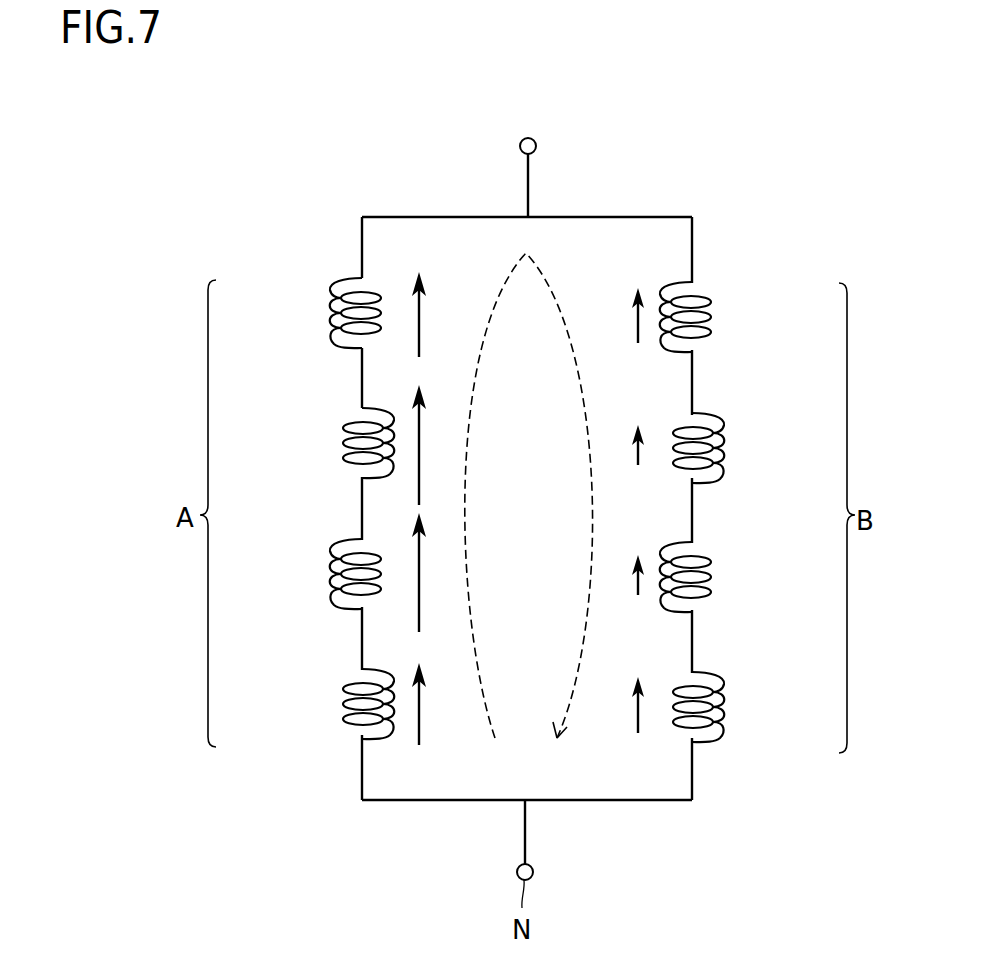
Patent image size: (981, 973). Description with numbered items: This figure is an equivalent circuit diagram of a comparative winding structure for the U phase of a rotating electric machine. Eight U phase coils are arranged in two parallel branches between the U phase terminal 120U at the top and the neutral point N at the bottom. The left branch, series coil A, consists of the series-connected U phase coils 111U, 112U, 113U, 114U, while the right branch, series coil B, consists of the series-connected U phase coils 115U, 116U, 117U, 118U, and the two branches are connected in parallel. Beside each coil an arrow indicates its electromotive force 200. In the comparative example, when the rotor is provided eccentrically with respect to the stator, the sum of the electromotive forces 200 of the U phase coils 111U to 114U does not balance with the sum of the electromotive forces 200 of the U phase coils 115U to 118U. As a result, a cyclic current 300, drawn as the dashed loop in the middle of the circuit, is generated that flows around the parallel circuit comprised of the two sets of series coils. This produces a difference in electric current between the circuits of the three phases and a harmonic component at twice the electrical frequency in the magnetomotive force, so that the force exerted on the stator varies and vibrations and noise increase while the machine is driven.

The U phase terminal 120U is at (530, 137).
The cyclic current 300 is at (565, 293).
The electromotive forces 200 is at (418, 488).
The U phase coil 111U is at (330, 304).
The U phase coil 112U is at (360, 418).
The U phase coil 113U is at (330, 565).
The U phase coil 114U is at (360, 726).
The U phase coil 115U is at (722, 733).
The U phase coil 116U is at (712, 562).
The U phase coil 117U is at (697, 417).
The U phase coil 118U is at (712, 303).